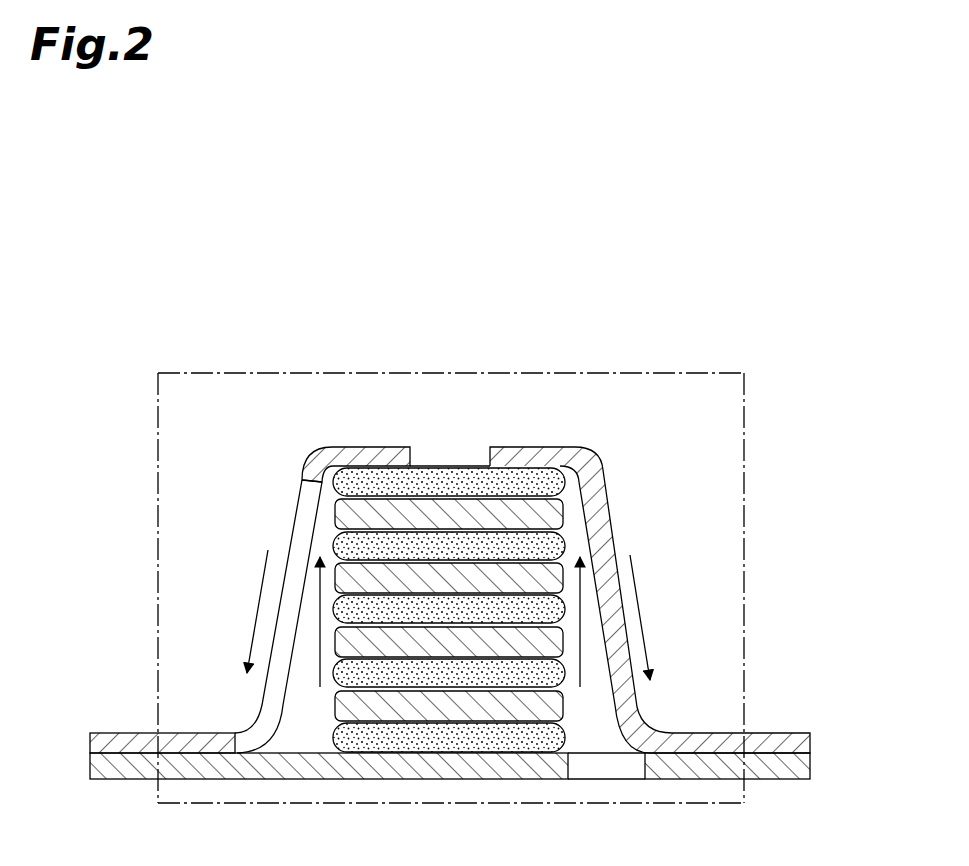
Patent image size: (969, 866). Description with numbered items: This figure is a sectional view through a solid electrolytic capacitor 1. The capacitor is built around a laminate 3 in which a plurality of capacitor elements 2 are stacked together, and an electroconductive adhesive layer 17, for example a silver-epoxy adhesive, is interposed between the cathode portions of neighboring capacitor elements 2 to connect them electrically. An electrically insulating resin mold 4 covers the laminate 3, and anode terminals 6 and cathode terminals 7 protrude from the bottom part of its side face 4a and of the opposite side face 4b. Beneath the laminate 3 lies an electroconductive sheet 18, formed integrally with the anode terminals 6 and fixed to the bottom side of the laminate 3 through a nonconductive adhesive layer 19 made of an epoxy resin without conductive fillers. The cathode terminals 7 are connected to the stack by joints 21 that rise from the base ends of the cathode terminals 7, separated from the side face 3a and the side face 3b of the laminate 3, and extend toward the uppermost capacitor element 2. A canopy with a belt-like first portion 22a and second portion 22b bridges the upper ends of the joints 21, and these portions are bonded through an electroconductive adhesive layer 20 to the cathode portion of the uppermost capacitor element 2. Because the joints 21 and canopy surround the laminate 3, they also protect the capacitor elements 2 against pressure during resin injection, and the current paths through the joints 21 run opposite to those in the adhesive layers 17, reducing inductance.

The solid electrolytic capacitor 1 is at (153, 333).
The capacitor element 2 is at (557, 510).
The laminate 3 is at (325, 718).
The side face 3a is at (332, 640).
The side face 3b is at (567, 583).
The resin mold 4 is at (220, 373).
The side face 4a is at (158, 533).
The side face 4b is at (744, 570).
The anode terminal 6 is at (125, 738).
The cathode terminal 7 is at (790, 733).
The electroconductive adhesive layer 17 is at (538, 547).
The electroconductive sheet 18 is at (497, 765).
The nonconductive adhesive layer 19 is at (390, 740).
The electroconductive adhesive layer 20 is at (452, 466).
The joint 21 is at (292, 528).
The first portion 22a is at (358, 447).
The second portion 22b is at (510, 447).